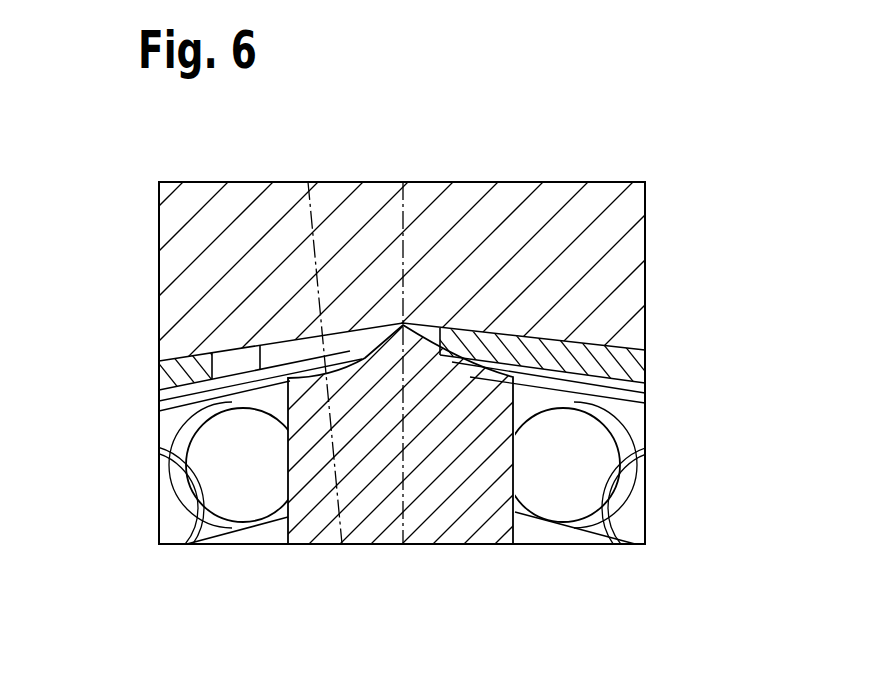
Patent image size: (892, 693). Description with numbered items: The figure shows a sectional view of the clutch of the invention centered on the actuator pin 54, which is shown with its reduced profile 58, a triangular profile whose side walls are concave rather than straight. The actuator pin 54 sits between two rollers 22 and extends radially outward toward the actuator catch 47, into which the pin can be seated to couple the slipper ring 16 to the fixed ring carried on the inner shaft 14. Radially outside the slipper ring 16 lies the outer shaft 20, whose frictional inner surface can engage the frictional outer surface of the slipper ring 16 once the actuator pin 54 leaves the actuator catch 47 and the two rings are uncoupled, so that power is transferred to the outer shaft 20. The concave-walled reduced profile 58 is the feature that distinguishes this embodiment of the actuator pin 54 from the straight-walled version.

The inner shaft 14 is at (260, 532).
The slipper ring 16 is at (620, 370).
The outer shaft 20 is at (618, 271).
The rollers 22 is at (268, 481).
The actuator catch 47 is at (283, 347).
The actuator pin 54 is at (466, 468).
The reduced profile 58 is at (440, 355).